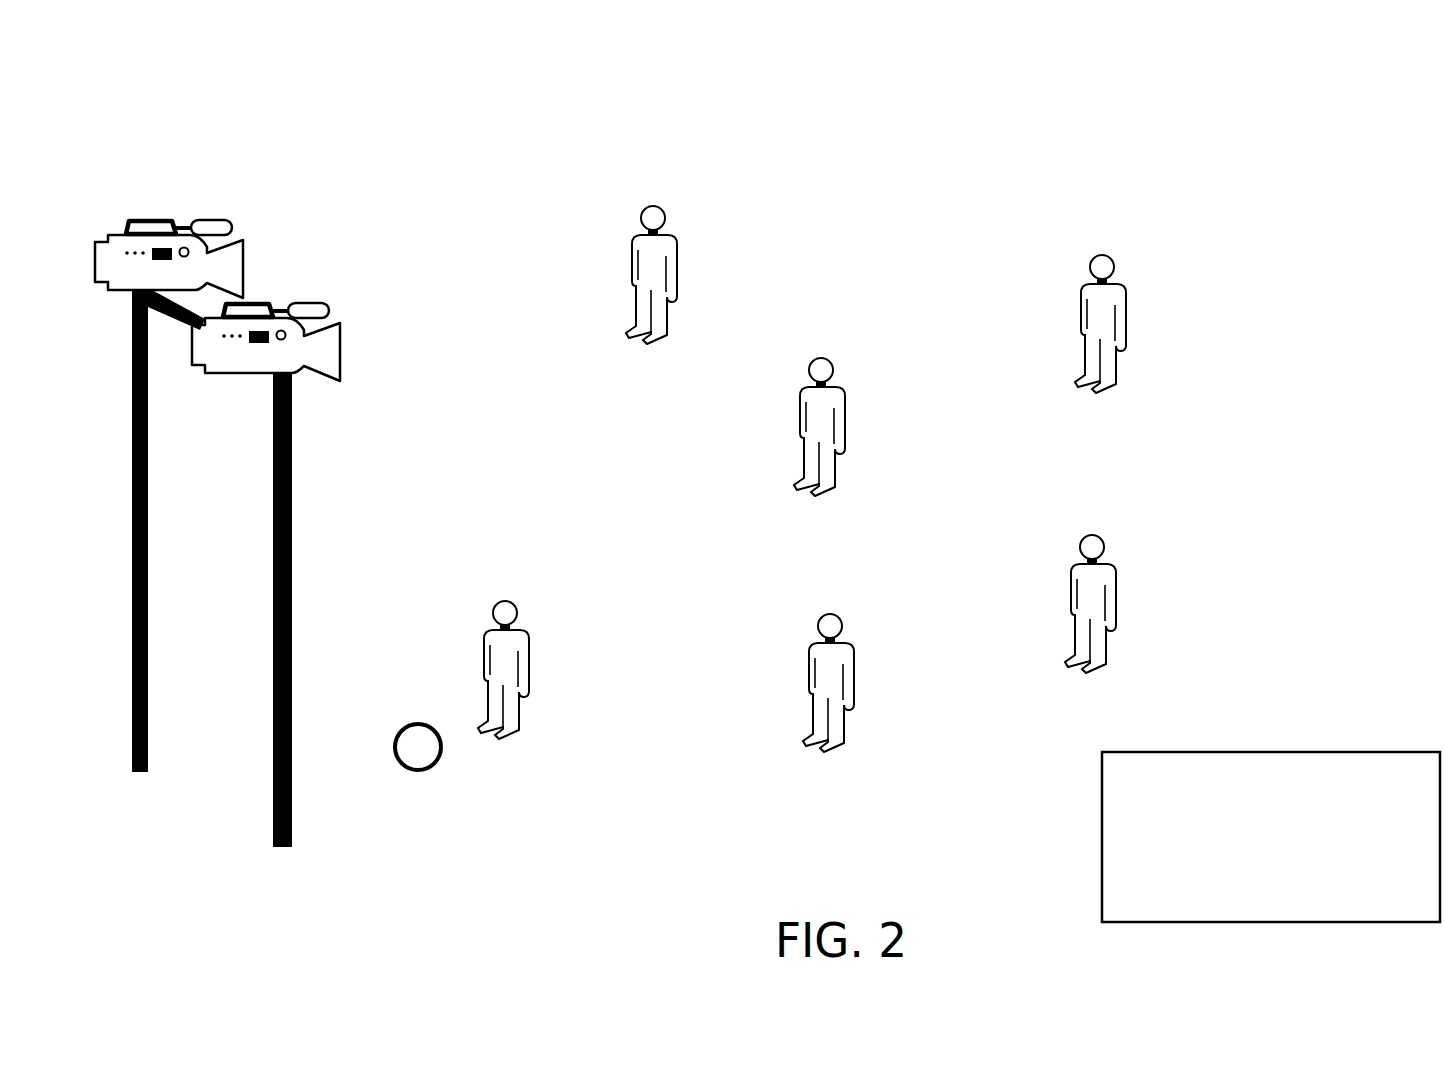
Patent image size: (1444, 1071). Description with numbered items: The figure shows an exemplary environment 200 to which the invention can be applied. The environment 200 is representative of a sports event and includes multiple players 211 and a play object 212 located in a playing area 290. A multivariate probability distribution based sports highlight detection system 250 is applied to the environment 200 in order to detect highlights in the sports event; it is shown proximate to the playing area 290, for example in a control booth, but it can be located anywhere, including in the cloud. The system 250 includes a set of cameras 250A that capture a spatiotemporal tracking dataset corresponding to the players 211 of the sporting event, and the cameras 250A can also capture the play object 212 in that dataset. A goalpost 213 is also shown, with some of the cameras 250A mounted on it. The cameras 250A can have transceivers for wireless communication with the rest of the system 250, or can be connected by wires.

The environment 200 is at (208, 77).
The players 211 is at (672, 193).
The play object 212 is at (412, 718).
The goalpost 213 is at (315, 550).
The set of cameras 250A is at (243, 205).
The multivariate probability distribution based sports highlight detection system 250 is at (1271, 837).
The playing area 290 is at (1260, 120).